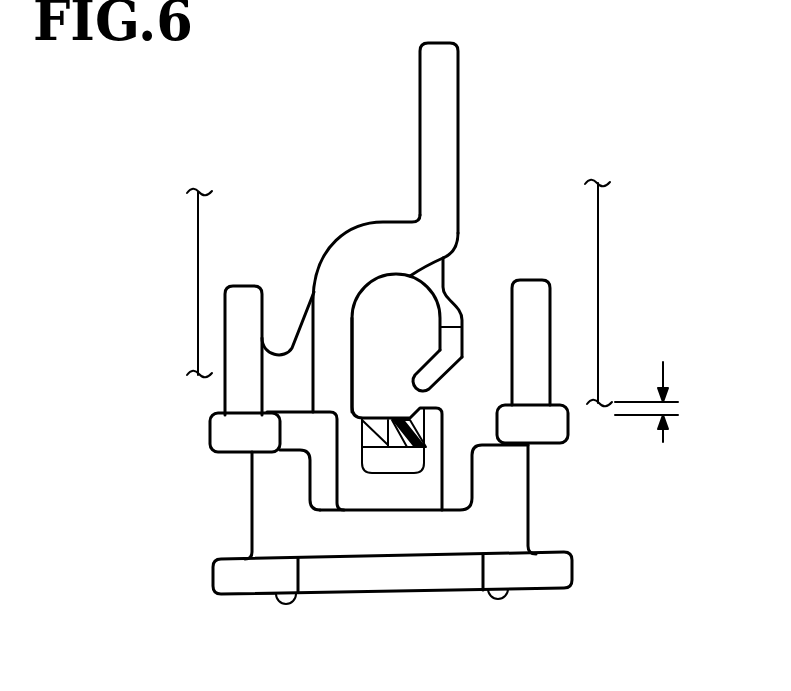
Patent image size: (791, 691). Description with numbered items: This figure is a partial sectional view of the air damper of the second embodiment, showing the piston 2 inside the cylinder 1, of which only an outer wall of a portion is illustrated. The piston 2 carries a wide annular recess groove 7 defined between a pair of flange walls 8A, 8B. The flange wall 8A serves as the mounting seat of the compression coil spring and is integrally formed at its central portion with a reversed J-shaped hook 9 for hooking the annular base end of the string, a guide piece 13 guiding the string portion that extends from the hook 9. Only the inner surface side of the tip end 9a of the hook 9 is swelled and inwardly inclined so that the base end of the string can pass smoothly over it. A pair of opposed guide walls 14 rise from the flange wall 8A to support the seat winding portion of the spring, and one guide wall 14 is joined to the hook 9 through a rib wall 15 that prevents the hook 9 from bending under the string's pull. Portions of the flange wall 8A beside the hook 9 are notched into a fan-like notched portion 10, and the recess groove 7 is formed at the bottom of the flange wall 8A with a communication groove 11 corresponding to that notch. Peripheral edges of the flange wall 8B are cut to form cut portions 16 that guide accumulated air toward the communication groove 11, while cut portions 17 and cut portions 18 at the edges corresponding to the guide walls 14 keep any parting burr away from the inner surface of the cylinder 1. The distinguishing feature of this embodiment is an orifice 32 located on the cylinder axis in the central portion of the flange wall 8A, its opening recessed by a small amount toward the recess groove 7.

The cylinder 1 is at (602, 238).
The piston 2 is at (385, 163).
The recess groove 7 is at (218, 487).
The flange wall 8A is at (538, 403).
The flange wall 8B is at (257, 590).
The hook 9 is at (358, 255).
The tip end 9a is at (415, 373).
The notched portion 10 is at (312, 436).
The communication groove 11 is at (352, 455).
The guide piece 13 is at (445, 137).
The guide wall 14 is at (248, 288).
The rib wall 15 is at (288, 350).
The cut portion 16 is at (440, 580).
The cut portion 17 is at (218, 577).
The cut portion 18 is at (218, 432).
The orifice 32 is at (392, 420).